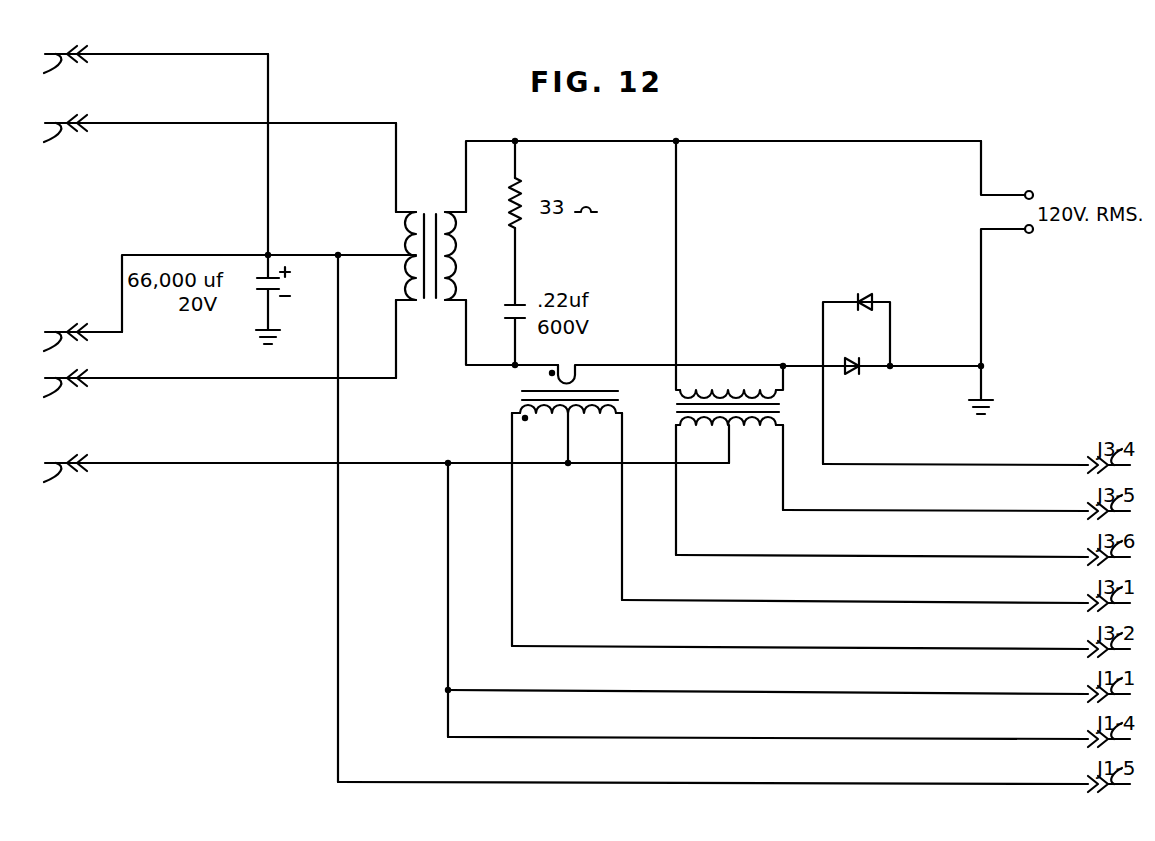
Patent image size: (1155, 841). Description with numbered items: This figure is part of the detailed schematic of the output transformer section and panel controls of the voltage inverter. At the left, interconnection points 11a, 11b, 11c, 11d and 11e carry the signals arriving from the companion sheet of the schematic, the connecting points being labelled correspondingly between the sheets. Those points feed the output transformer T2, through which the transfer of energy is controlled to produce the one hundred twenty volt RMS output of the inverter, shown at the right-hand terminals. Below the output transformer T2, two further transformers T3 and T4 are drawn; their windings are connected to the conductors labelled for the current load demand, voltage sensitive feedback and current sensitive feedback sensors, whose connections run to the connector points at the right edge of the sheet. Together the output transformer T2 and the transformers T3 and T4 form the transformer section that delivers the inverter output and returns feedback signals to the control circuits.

The connector pin 11a is at (145, 150).
The connector pin 11b is at (209, 163).
The connector pin 11c is at (212, 312).
The connector pin 11d is at (202, 357).
The connector pin 11e is at (368, 478).
The transformer T2 is at (688, 253).
The transformer T3 is at (627, 414).
The transformer T4 is at (708, 302).